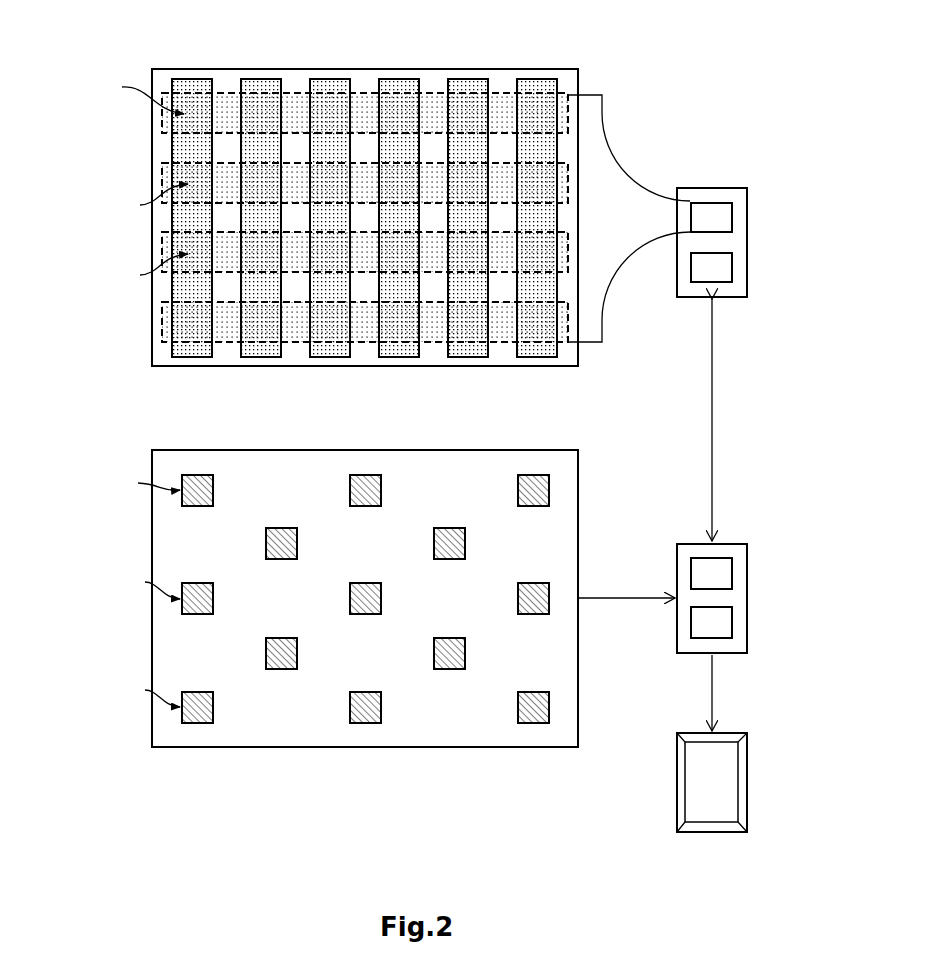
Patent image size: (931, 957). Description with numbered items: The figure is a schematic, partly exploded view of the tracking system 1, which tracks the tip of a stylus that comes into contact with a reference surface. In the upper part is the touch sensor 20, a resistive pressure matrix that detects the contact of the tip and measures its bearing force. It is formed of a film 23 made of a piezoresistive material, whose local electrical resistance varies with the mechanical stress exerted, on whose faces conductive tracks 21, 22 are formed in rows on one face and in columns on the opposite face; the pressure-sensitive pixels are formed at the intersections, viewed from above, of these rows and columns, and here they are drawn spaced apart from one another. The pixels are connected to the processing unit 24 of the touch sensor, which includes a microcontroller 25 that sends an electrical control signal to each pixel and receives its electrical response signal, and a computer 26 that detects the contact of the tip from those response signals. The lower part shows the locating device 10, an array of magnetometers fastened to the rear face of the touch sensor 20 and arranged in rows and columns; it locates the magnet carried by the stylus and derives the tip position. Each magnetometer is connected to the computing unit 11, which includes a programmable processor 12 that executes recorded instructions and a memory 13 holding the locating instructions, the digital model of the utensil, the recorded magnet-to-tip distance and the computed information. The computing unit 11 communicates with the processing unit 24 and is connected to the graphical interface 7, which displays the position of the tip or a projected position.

The tracking system 1 is at (104, 38).
The touch sensor 20 is at (314, 194).
The conductive tracks (rows) 21 is at (295, 92).
The conductive tracks (columns) 22 is at (260, 77).
The film 23 is at (363, 68).
The processing unit 24 is at (748, 254).
The microcontroller 25 is at (734, 217).
The computer 26 is at (734, 268).
The locating device 10 is at (116, 545).
The computing unit 11 is at (748, 610).
The programmable processor 12 is at (734, 573).
The memory 13 is at (734, 623).
The graphical interface 7 is at (750, 784).